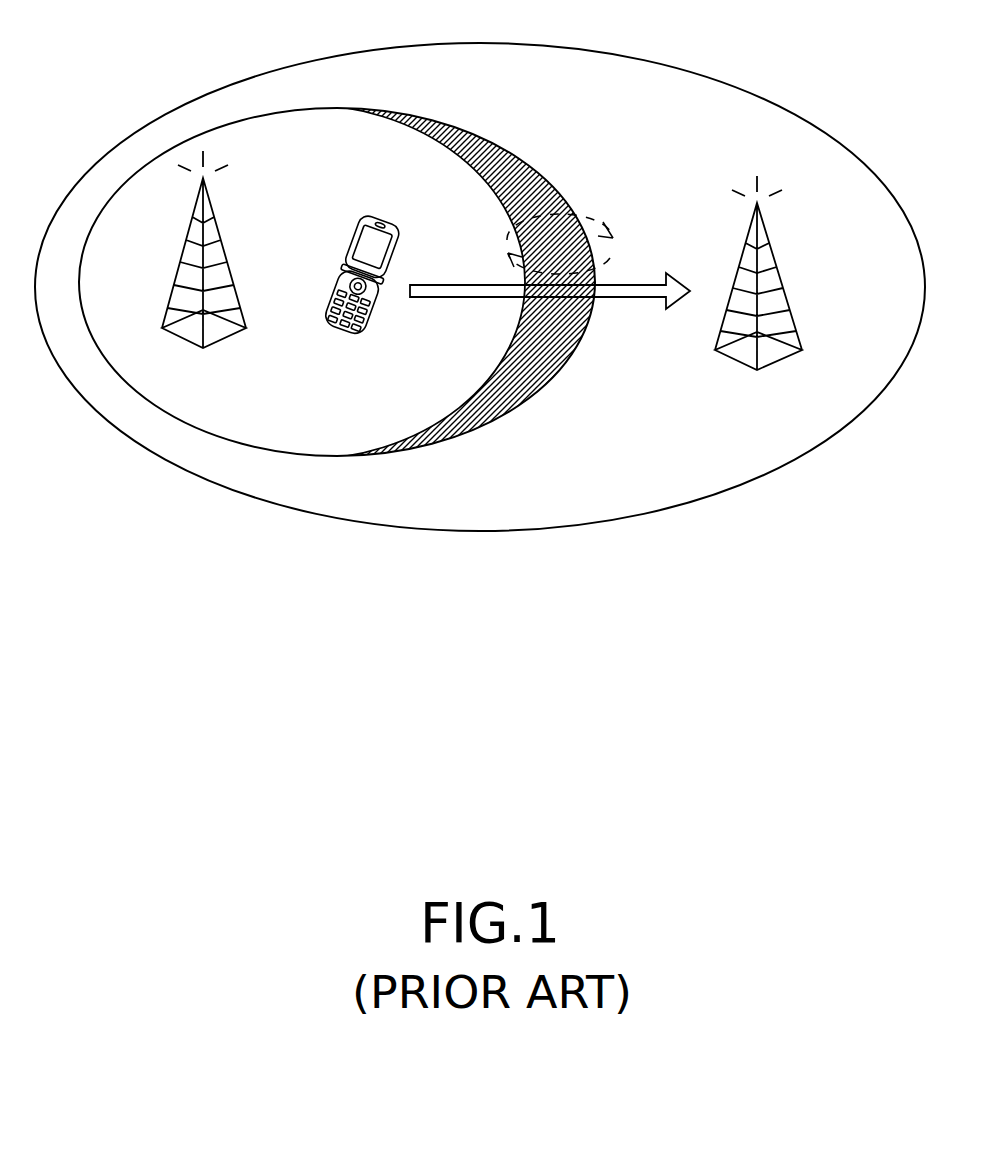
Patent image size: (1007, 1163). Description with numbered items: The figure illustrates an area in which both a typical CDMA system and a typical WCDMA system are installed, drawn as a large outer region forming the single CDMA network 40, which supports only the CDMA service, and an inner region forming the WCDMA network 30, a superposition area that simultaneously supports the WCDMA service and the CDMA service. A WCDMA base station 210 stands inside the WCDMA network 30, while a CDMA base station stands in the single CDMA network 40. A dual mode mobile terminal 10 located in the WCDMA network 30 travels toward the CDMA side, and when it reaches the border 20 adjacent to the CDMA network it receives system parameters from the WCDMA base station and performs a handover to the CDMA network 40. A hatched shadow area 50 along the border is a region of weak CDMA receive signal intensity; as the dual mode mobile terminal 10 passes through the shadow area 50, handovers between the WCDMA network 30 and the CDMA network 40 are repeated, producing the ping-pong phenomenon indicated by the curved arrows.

The dual mode mobile terminal 10 is at (404, 250).
The border 20 is at (541, 300).
The WCDMA network (superposition area) 30 is at (279, 112).
The single CDMA network 40 is at (522, 43).
The shadow area 50 is at (511, 152).
The WCDMA base station 210 is at (228, 258).